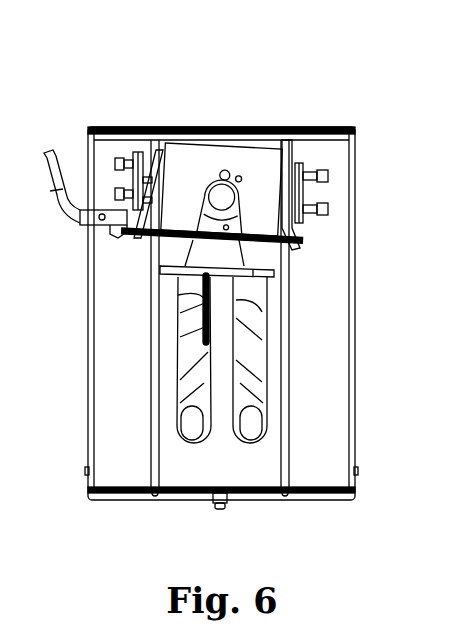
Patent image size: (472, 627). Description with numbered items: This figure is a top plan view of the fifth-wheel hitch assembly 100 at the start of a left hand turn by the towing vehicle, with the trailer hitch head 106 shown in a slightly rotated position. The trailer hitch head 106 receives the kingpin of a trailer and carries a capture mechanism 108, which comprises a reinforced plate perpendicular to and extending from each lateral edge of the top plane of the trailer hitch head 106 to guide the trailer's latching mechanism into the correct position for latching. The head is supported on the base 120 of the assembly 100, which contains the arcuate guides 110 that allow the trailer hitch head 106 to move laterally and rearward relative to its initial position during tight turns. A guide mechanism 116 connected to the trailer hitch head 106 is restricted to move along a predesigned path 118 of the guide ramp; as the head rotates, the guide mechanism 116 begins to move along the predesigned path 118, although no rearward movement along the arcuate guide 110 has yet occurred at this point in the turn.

The fifth-wheel hitch assembly 100 is at (124, 78).
The trailer hitch head 106 is at (258, 162).
The capture mechanism 108 is at (320, 176).
The arcuate guide 110 is at (245, 439).
The guide mechanism 116 is at (203, 340).
The predesigned path 118 is at (185, 362).
The base 120 is at (353, 306).